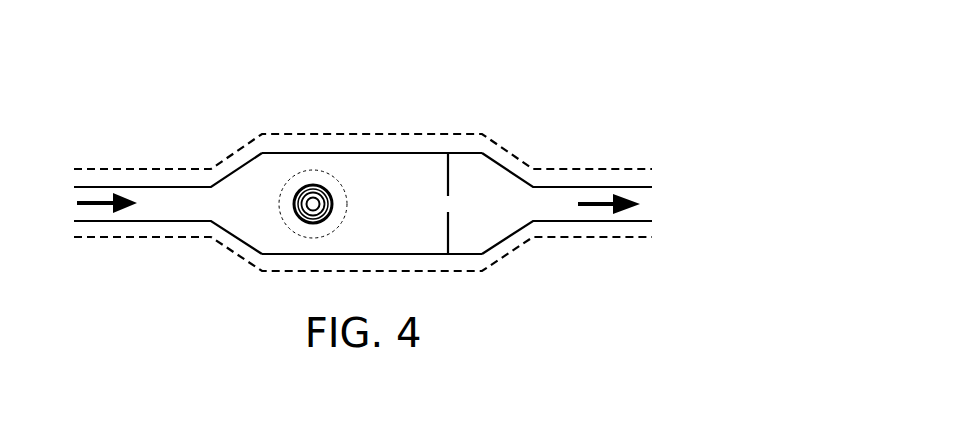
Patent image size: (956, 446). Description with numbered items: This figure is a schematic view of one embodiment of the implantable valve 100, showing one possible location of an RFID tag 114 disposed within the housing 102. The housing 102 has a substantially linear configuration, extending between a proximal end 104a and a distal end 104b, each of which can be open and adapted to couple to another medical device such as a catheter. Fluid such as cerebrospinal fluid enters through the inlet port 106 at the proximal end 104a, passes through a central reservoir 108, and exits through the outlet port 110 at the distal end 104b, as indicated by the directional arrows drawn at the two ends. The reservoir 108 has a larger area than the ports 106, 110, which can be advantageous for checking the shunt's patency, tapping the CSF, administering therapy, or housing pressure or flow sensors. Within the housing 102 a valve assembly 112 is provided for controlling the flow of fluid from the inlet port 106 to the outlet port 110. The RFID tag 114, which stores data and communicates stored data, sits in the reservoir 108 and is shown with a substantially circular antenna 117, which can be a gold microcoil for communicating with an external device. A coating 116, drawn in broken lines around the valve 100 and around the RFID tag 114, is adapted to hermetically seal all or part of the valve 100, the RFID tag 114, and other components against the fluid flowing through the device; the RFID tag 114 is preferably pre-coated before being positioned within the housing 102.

The implantable valve 100 is at (160, 85).
The valve housing 102 is at (295, 153).
The proximal end 104a is at (82, 152).
The distal end 104b is at (633, 152).
The inlet port 106 is at (155, 203).
The reservoir 108 is at (346, 169).
The outlet port 110 is at (567, 203).
The valve assembly 112 is at (428, 184).
The RFID tag 114 is at (302, 220).
The coating 116 is at (223, 158).
The antenna 117 is at (303, 218).